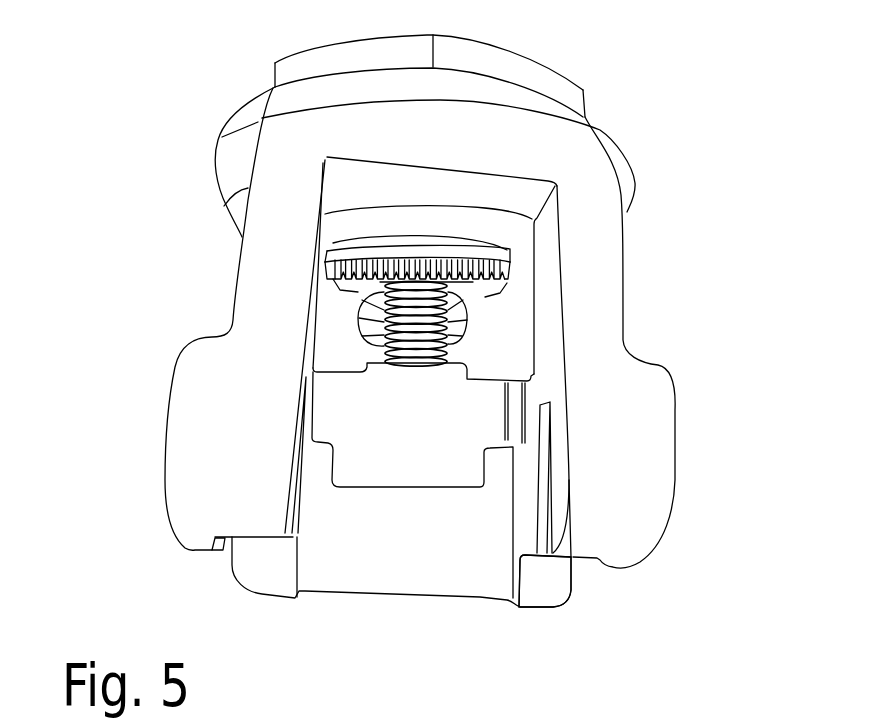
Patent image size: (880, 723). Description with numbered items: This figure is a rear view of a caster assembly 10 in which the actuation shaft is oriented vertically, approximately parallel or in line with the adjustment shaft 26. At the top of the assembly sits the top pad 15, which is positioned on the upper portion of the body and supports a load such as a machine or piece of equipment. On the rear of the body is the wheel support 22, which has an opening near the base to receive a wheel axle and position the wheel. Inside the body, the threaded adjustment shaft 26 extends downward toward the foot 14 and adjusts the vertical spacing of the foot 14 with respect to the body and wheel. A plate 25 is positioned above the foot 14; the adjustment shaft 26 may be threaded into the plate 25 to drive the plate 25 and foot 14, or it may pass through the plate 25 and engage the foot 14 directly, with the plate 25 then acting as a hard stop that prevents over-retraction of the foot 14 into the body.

The caster assembly 10 is at (193, 43).
The top pad 15 is at (528, 70).
The wheel support 22 is at (658, 460).
The adjustment shaft 26 is at (485, 297).
The plate 25 is at (412, 450).
The foot 14 is at (482, 588).